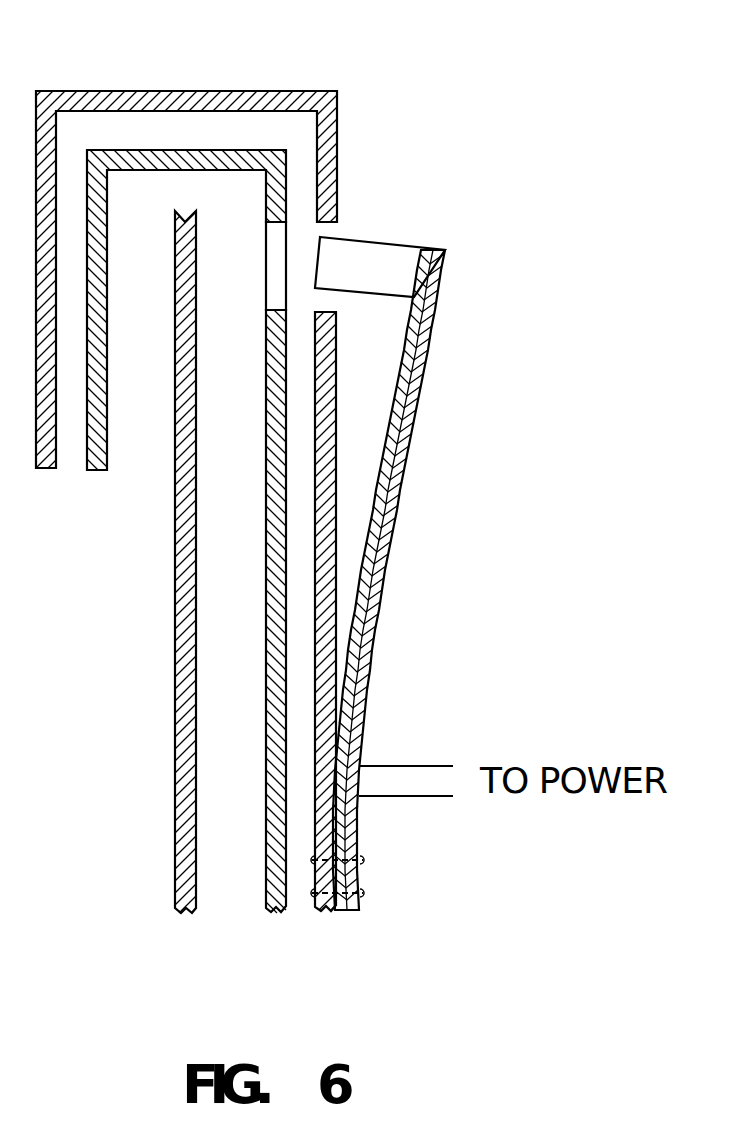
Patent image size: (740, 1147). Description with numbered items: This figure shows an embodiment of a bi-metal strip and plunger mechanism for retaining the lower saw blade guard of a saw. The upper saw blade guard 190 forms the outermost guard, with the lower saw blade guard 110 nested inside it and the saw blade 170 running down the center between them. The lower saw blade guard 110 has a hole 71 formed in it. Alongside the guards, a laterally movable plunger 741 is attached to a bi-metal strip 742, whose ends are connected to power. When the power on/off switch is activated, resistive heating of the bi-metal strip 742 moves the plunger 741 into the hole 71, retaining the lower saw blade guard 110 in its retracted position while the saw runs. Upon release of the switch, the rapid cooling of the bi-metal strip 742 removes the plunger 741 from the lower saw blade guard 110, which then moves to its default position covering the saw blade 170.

The upper saw blade guard 190 is at (148, 91).
The lower saw blade guard 110 is at (95, 470).
The hole 71 is at (272, 267).
The saw blade 170 is at (173, 712).
The plunger 741 is at (391, 242).
The bi-metal strip 742 is at (424, 375).